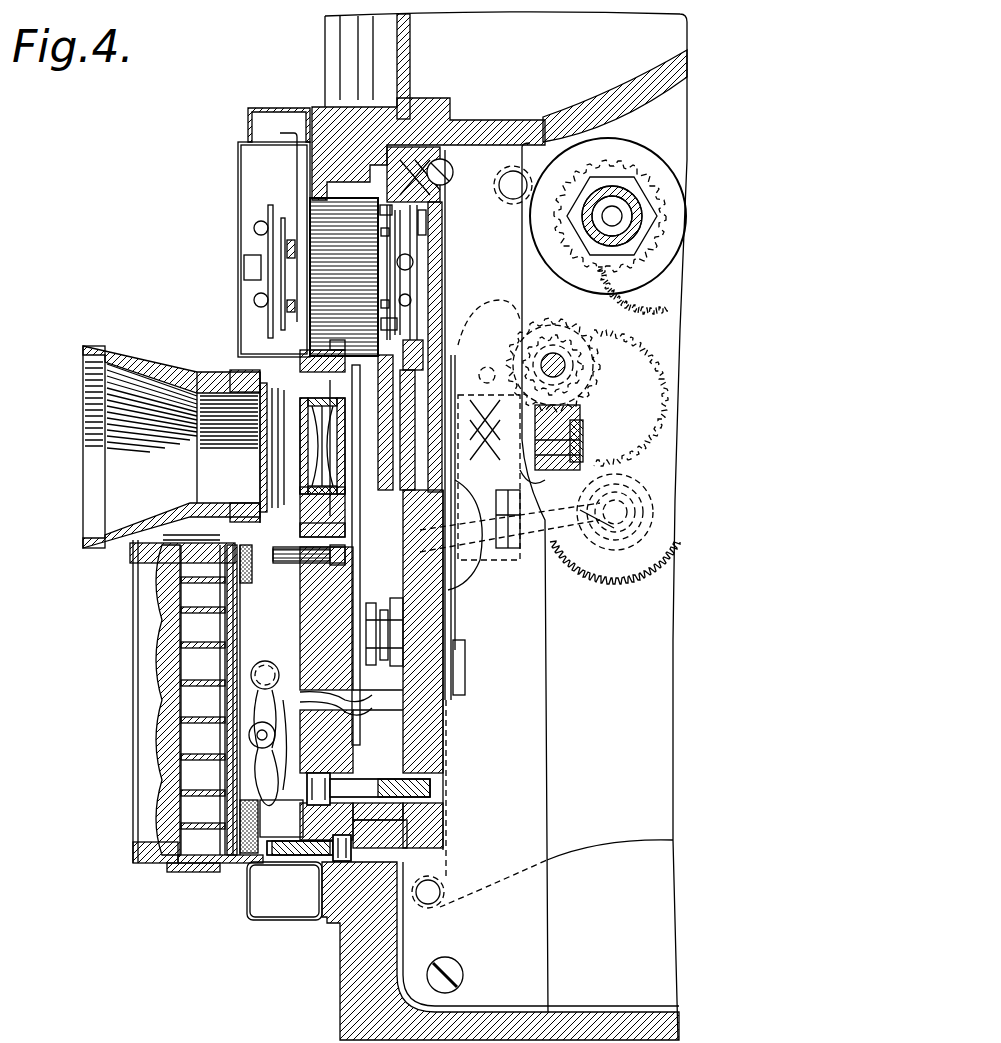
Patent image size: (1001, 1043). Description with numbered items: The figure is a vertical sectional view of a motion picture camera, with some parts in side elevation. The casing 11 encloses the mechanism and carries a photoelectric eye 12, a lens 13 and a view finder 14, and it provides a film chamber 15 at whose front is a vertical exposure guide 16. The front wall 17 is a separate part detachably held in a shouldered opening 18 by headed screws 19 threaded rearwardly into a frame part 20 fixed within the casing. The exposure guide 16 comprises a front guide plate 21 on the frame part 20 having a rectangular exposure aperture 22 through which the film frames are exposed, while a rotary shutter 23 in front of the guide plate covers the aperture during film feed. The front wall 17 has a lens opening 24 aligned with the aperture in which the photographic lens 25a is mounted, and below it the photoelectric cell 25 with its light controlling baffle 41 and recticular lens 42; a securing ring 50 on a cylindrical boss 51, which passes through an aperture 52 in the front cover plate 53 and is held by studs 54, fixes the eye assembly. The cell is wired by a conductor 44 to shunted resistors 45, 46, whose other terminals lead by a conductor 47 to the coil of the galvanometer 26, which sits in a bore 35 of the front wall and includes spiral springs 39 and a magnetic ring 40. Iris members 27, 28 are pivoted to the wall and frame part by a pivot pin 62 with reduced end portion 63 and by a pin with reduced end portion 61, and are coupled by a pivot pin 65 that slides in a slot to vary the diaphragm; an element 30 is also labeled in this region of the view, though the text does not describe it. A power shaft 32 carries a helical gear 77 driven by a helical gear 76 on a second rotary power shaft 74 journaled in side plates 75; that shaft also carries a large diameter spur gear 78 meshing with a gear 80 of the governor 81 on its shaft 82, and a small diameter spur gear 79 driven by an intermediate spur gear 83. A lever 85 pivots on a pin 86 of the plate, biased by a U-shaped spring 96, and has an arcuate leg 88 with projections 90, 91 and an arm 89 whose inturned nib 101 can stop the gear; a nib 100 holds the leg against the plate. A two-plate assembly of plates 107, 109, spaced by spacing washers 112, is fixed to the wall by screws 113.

The casing 11 is at (345, 984).
The photoelectric eye 12 is at (125, 807).
The lens 13 is at (82, 432).
The view finder 14 is at (492, 59).
The film chamber 15 is at (603, 779).
The exposure guide 16 is at (459, 641).
The front wall 17 is at (302, 820).
The shouldered opening 18 is at (385, 866).
The headed screws 19 is at (430, 790).
The frame part 20 is at (430, 745).
The front guide plate 21 is at (447, 660).
The exposure aperture 22 is at (520, 515).
The rotary shutter 23 is at (498, 342).
The lens opening 24 is at (318, 487).
The photoelectric cell 25 is at (229, 634).
The photographic lens 25a is at (312, 455).
The galvanometer 26 is at (279, 191).
The iris member 27 is at (353, 394).
The iris member 28 is at (392, 603).
The plate 30 is at (352, 612).
The power shaft 32 is at (520, 475).
The bore 35 is at (362, 322).
The spiral springs 39 is at (400, 290).
The ring 40 is at (343, 274).
The light controlling baffle 41 is at (203, 700).
The recticular lens 42 is at (162, 664).
The conductor 44 is at (288, 798).
The resistor 45 is at (249, 738).
The resistor 46 is at (265, 661).
The conductor 47 is at (373, 697).
The securing ring 50 is at (152, 866).
The cylindrical boss 51 is at (235, 875).
The aperture 52 is at (263, 845).
The front cover plate 53 is at (238, 212).
The studs 54 is at (272, 565).
The radially reduced end portion 61 is at (448, 575).
The pivot pin 62 is at (368, 667).
The radially reduced end portion 63 is at (445, 650).
The pivot pin 65 is at (452, 612).
The second rotary power shaft 74 is at (557, 364).
The side plates 75 is at (665, 641).
The helical gear 76 is at (577, 376).
The helical gear 77 is at (580, 432).
The large diameter spur gear 78 is at (660, 390).
The small diameter spur gear 79 is at (568, 360).
The gear 80 is at (652, 222).
The governor 81 is at (683, 180).
The shaft 82 is at (612, 203).
The intermediate spur gear 83 is at (625, 583).
The lever 85 is at (588, 540).
The pin 86 is at (628, 482).
The leg 88 is at (518, 322).
The arm 89 is at (475, 455).
The projection 90 is at (562, 314).
The projection 91 is at (563, 327).
The U-shaped spring 96 is at (560, 548).
The nib 100 is at (499, 381).
The inturned nib 101 is at (575, 416).
The plate 107 is at (440, 190).
The second plate 109 is at (352, 220).
The spacing washers 112 is at (372, 258).
The screws 113 is at (418, 237).